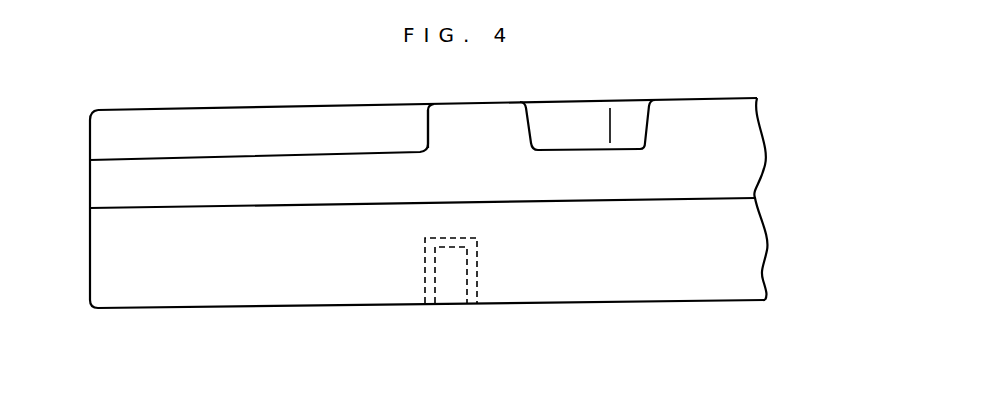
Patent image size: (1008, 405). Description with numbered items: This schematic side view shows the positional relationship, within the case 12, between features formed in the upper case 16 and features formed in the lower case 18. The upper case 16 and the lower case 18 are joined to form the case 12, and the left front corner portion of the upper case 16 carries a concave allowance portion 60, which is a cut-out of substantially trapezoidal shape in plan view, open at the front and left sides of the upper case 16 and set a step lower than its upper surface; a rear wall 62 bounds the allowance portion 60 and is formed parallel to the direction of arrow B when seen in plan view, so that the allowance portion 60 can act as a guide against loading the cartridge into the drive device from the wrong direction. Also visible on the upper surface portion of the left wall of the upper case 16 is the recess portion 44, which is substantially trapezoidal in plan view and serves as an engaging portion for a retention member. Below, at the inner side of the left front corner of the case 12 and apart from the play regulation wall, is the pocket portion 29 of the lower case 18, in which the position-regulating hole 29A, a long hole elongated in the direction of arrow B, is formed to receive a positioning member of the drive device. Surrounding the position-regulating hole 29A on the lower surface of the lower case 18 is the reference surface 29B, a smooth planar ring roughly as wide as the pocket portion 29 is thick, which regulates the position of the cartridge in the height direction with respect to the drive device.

The case 12 is at (487, 102).
The upper case 16 is at (108, 186).
The lower case 18 is at (117, 257).
The allowance portion 60 is at (249, 156).
The rear wall 62 is at (427, 132).
The recess portion 44 is at (578, 150).
The pocket portion 29 is at (479, 271).
The position-regulating hole 29A is at (437, 283).
The reference surface 29B is at (433, 307).